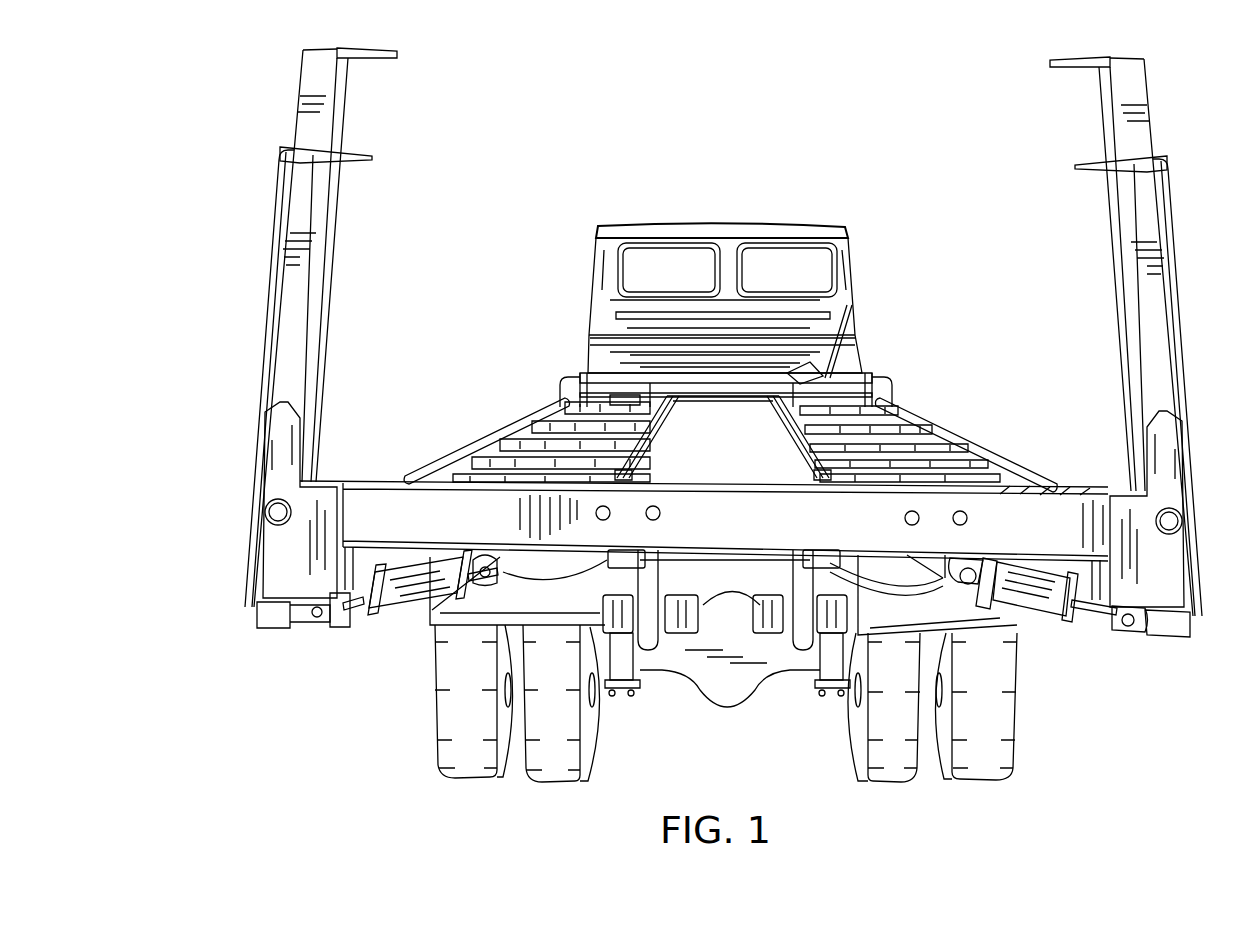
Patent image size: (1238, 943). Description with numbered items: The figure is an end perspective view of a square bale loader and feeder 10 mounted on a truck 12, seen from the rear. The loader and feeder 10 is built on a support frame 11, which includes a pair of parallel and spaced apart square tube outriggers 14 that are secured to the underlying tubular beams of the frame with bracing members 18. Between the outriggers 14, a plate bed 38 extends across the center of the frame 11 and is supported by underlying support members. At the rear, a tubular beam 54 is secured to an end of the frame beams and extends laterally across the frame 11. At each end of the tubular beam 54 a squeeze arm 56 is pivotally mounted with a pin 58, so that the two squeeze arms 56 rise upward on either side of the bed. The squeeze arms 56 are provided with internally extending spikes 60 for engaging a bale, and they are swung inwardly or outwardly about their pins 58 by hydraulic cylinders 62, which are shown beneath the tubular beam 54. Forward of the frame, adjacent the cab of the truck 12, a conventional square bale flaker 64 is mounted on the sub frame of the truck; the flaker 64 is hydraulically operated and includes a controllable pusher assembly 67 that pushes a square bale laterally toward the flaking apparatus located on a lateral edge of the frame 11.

The square bale loader and feeder 10 is at (210, 367).
The support frame 11 is at (521, 393).
The truck 12 is at (657, 232).
The square tube outriggers 14 is at (470, 452).
The bracing members 18 is at (525, 458).
The plate bed 38 is at (704, 461).
The tubular beam 54 is at (378, 503).
The squeeze arm 56 is at (277, 262).
The pin 58 is at (265, 510).
The spikes 60 is at (290, 150).
The hydraulic cylinders 62 is at (388, 600).
The square bale flaker 64 is at (562, 352).
The pusher assembly 67 is at (848, 316).